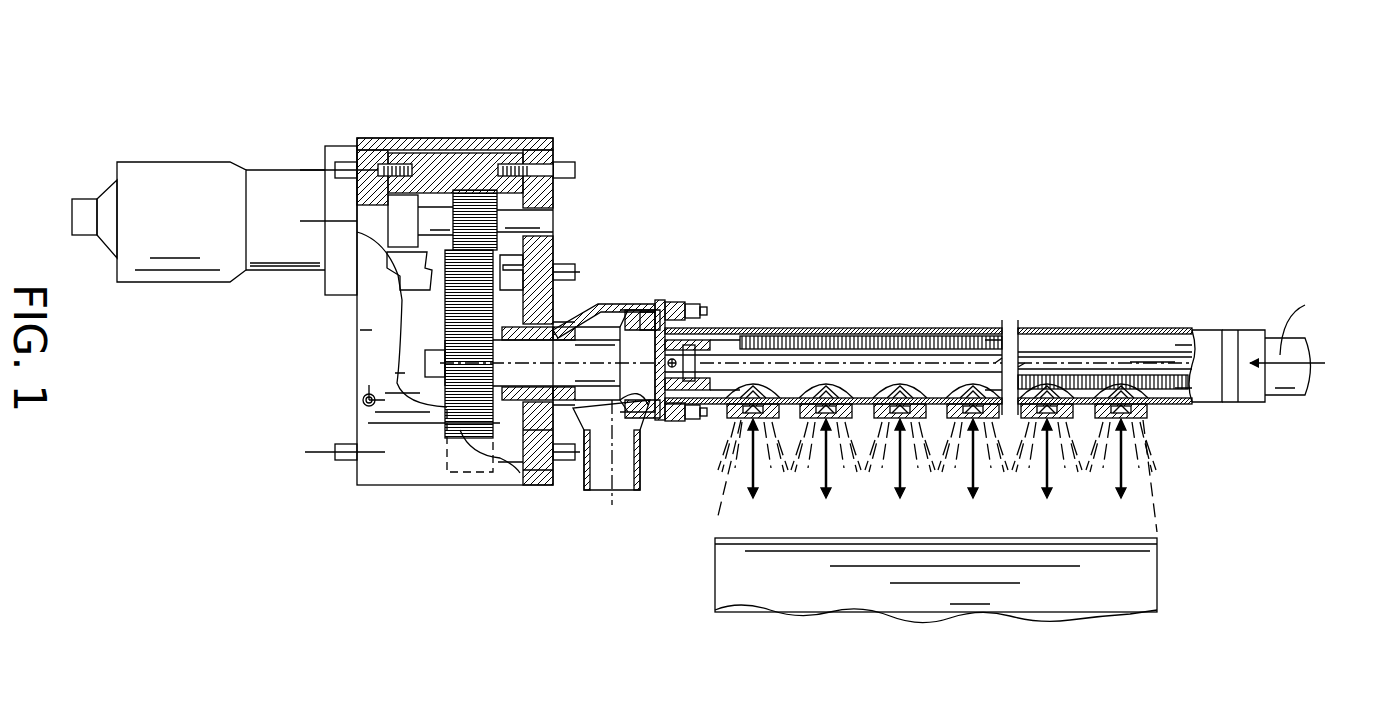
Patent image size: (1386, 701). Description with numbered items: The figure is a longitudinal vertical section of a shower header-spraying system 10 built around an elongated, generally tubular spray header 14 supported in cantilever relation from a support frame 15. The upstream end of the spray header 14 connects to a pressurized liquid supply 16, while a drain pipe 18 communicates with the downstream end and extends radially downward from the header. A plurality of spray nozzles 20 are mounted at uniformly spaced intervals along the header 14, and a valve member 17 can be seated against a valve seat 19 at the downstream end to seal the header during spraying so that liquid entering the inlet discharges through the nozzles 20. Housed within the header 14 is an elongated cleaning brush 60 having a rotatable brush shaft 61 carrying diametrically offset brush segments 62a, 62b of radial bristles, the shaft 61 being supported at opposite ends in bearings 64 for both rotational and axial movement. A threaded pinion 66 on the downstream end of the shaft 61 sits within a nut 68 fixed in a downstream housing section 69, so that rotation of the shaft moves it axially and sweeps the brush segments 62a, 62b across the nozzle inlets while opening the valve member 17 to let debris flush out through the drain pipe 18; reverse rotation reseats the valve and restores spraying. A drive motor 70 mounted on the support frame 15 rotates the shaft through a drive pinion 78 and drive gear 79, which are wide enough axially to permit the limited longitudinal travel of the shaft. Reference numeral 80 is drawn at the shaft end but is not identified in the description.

The shower header-spraying system 10 is at (917, 280).
The spray header 14 is at (1038, 328).
The support frame 15 is at (350, 396).
The pressurized liquid supply 16 is at (1285, 395).
The valve member 17 is at (632, 412).
The drain pipe 18 is at (624, 490).
The valve seat 19 is at (640, 304).
The spray nozzles 20 is at (898, 424).
The cleaning brush 60 is at (988, 330).
The brush shaft 61 is at (1080, 352).
The brush segment 62a is at (1176, 400).
The brush segment 62b is at (847, 330).
The bearings 64 is at (528, 455).
The threaded pinion 66 is at (592, 395).
The nut 68 is at (572, 328).
The downstream housing section 69 is at (603, 305).
The drive motor 70 is at (181, 162).
The drive pinion 78 is at (470, 190).
The drive gear 79 is at (447, 312).
The shaft end 80 is at (1130, 352).